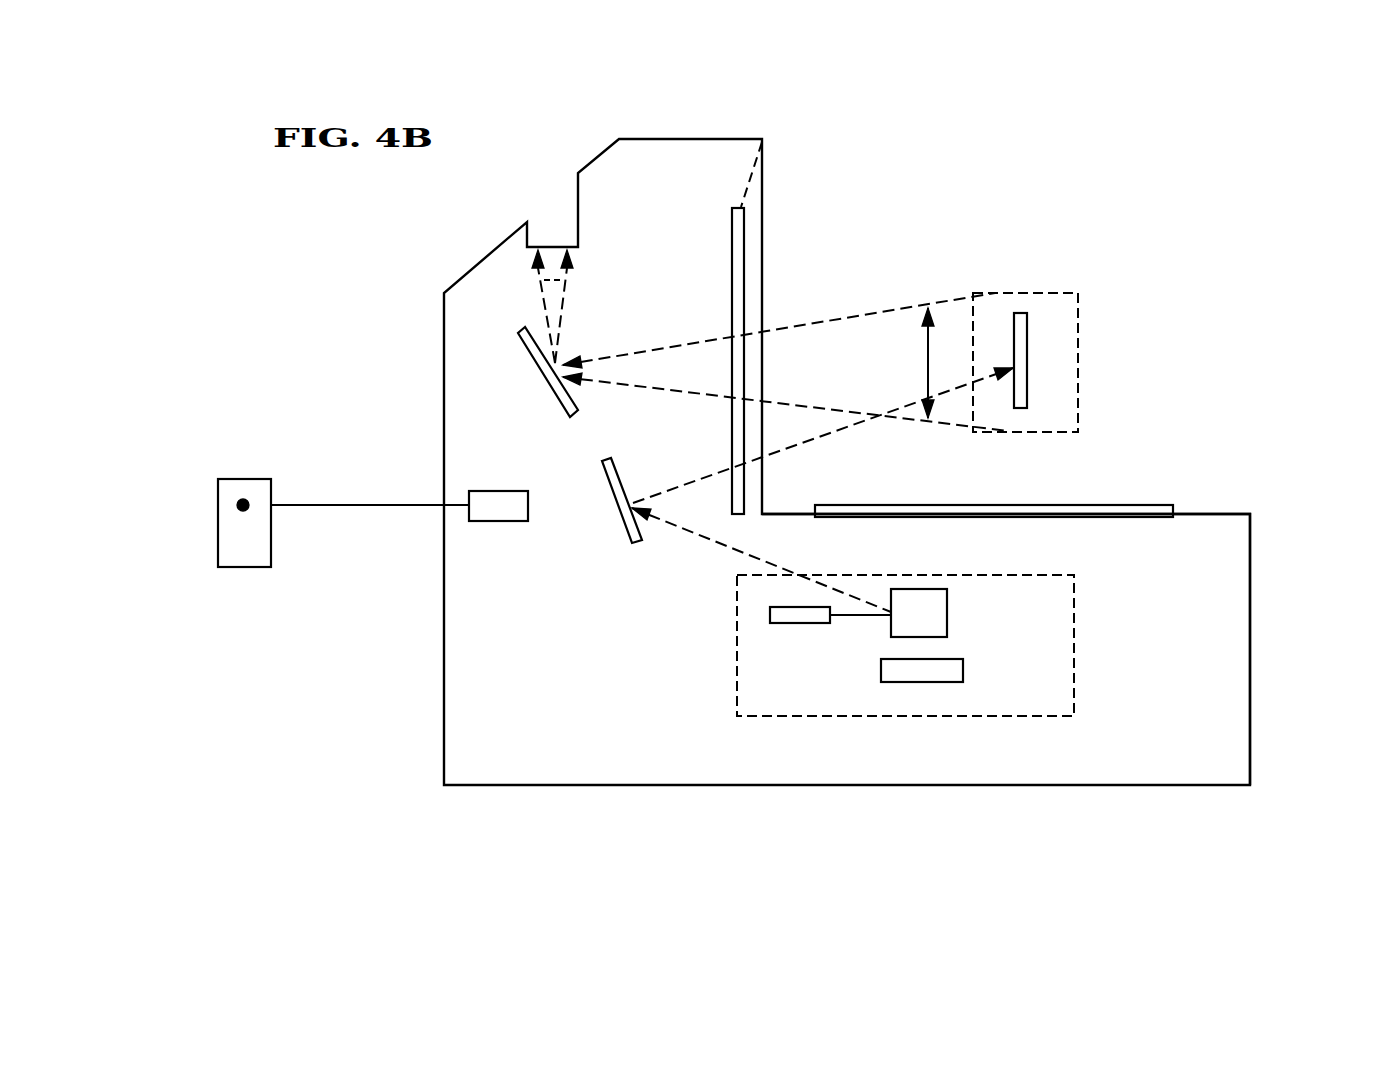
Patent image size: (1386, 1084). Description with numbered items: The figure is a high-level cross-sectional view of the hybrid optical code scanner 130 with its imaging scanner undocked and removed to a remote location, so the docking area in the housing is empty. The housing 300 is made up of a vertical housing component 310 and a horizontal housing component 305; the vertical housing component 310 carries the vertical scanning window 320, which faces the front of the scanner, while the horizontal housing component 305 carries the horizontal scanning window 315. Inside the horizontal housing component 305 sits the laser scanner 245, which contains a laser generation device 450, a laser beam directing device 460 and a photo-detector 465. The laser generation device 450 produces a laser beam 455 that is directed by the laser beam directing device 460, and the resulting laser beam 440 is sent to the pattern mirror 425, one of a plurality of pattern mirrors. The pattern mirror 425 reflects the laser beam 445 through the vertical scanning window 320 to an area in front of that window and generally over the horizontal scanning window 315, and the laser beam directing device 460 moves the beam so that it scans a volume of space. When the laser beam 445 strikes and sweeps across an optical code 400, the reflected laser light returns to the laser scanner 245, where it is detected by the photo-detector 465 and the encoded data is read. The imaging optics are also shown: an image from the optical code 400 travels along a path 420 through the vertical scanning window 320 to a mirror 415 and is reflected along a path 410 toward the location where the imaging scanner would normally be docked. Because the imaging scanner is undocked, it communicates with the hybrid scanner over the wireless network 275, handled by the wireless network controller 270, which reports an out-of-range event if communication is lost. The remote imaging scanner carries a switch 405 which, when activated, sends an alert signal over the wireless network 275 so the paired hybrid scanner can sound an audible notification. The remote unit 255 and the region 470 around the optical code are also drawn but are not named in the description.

The hybrid optical code scanner 130 is at (1272, 95).
The laser scanner 245 is at (1074, 630).
The light source 255 is at (218, 538).
The wireless network controller 270 is at (490, 491).
The wireless network 275 is at (363, 507).
The housing 300 is at (548, 740).
The horizontal housing component 305 is at (1227, 513).
The vertical housing component 310 is at (732, 139).
The horizontal scanning window 315 is at (1148, 505).
The vertical scanning window 320 is at (730, 227).
The optical code 400 is at (1027, 388).
The switch 405 is at (243, 505).
The path 410 is at (548, 288).
The mirror 415 is at (523, 342).
The path 420 is at (928, 361).
The pattern mirror 425 is at (623, 525).
The laser beam 440 is at (730, 547).
The laser beam 445 is at (832, 433).
The laser generation device 450 is at (785, 623).
The laser beam 455 is at (873, 615).
The laser beam directing device 460 is at (947, 618).
The photo-detector 465 is at (963, 672).
The detector assembly 470 is at (1079, 318).